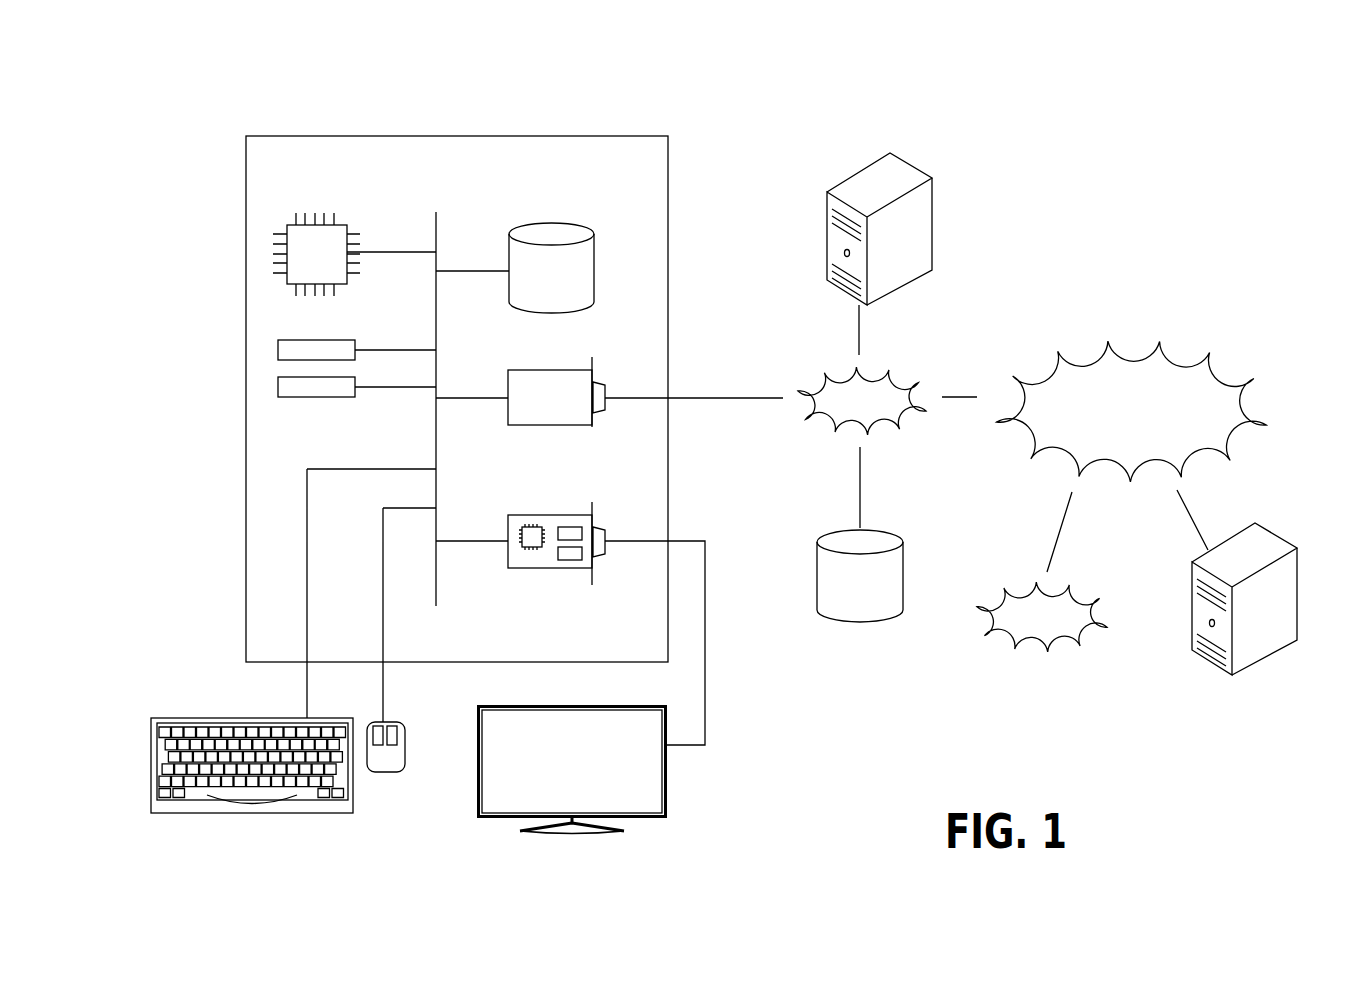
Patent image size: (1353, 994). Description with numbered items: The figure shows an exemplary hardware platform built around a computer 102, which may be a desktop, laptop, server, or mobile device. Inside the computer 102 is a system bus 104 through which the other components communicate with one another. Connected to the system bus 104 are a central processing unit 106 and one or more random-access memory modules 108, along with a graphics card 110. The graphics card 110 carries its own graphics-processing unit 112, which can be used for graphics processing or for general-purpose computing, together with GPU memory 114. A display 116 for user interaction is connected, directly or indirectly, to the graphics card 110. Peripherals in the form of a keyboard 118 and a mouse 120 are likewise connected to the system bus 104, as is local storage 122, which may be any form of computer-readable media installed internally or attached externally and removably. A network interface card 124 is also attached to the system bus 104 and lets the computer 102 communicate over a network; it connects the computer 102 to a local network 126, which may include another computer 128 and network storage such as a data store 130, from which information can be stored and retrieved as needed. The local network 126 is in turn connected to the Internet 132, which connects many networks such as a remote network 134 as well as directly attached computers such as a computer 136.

The computer 102 is at (622, 136).
The system bus 104 is at (437, 222).
The central processing unit 106 is at (340, 221).
The memory 108 is at (356, 382).
The graphics card 110 is at (547, 543).
The graphics-processing unit 112 is at (531, 548).
The GPU memory 114 is at (567, 560).
The display 116 is at (667, 798).
The keyboard 118 is at (255, 813).
The mouse 120 is at (380, 774).
The local storage 122 is at (599, 252).
The network interface card 124 is at (508, 380).
The local network 126 is at (913, 356).
The computer 128 is at (913, 165).
The data store 130 is at (895, 530).
The Internet 132 is at (1175, 320).
The remote network 134 is at (1098, 573).
The computer 136 is at (1270, 530).